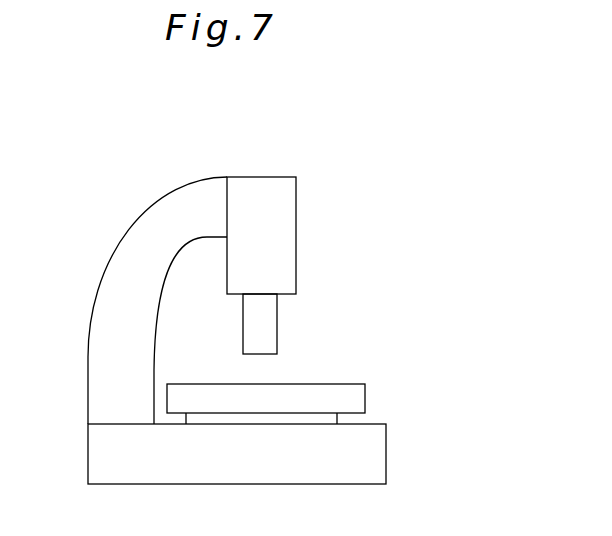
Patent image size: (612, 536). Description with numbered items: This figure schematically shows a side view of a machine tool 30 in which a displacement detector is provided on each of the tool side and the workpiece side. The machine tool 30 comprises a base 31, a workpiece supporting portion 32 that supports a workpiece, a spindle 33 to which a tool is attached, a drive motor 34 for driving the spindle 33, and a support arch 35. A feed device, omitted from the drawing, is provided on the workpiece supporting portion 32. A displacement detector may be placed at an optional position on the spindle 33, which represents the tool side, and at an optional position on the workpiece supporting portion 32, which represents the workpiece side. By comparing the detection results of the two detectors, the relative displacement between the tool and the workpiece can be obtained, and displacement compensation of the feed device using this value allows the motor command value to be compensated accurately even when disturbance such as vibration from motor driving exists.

The machine tool 30 is at (104, 155).
The base 31 is at (378, 447).
The workpiece supporting portion 32 is at (358, 393).
The spindle 33 is at (280, 333).
The drive motor 34 is at (287, 235).
The support arch 35 is at (97, 363).